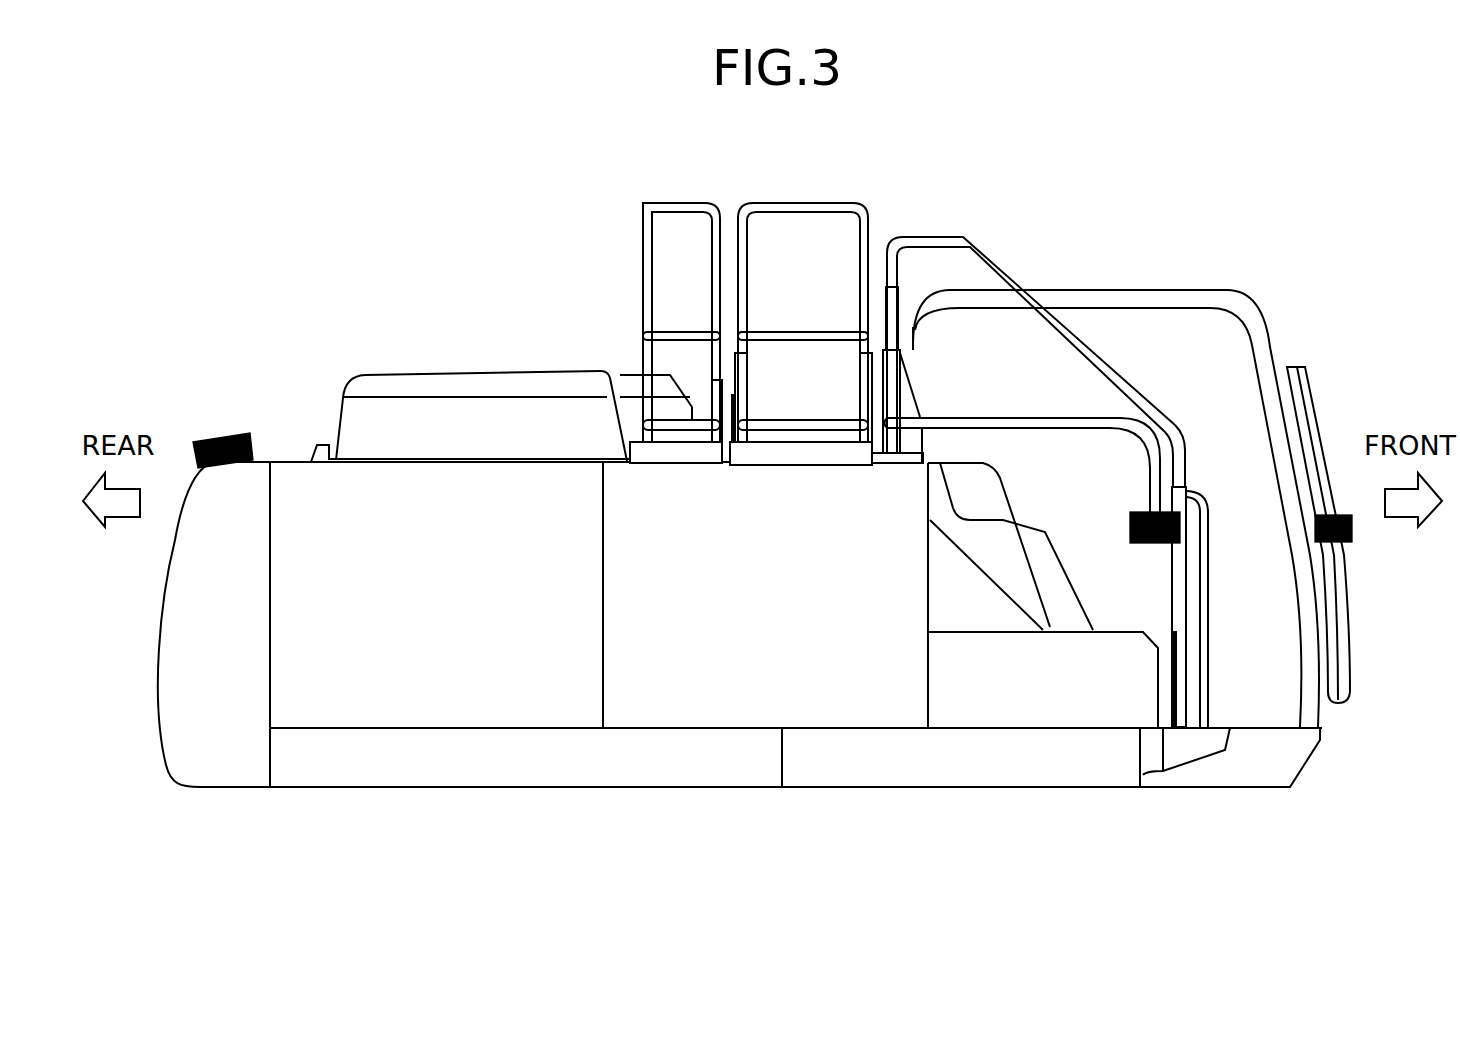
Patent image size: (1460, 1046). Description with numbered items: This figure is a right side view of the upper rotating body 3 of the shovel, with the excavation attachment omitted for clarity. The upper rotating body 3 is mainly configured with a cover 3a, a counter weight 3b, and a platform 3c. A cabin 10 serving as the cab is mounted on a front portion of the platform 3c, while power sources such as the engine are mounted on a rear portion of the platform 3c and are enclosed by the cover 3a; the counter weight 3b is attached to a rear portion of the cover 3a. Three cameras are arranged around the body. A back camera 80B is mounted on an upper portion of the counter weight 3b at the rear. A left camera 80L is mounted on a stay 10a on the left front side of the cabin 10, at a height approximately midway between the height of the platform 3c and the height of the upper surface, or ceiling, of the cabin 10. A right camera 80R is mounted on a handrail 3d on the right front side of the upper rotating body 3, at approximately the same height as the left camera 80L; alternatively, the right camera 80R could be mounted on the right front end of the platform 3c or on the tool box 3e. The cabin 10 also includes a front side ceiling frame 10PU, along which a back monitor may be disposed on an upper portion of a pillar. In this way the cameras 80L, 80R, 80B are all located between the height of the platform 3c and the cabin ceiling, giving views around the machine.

The upper rotating body 3 is at (513, 334).
The cover 3a is at (523, 676).
The counter weight 3b is at (257, 492).
The platform 3c is at (1288, 763).
The handrail 3d is at (1177, 583).
The tool box 3e is at (1133, 707).
The cabin 10 is at (1178, 297).
The front side ceiling frame 10PU is at (1260, 318).
The stay 10a is at (1327, 463).
The back camera 80B is at (236, 433).
The right camera 80R is at (1180, 523).
The left camera 80L is at (1352, 542).